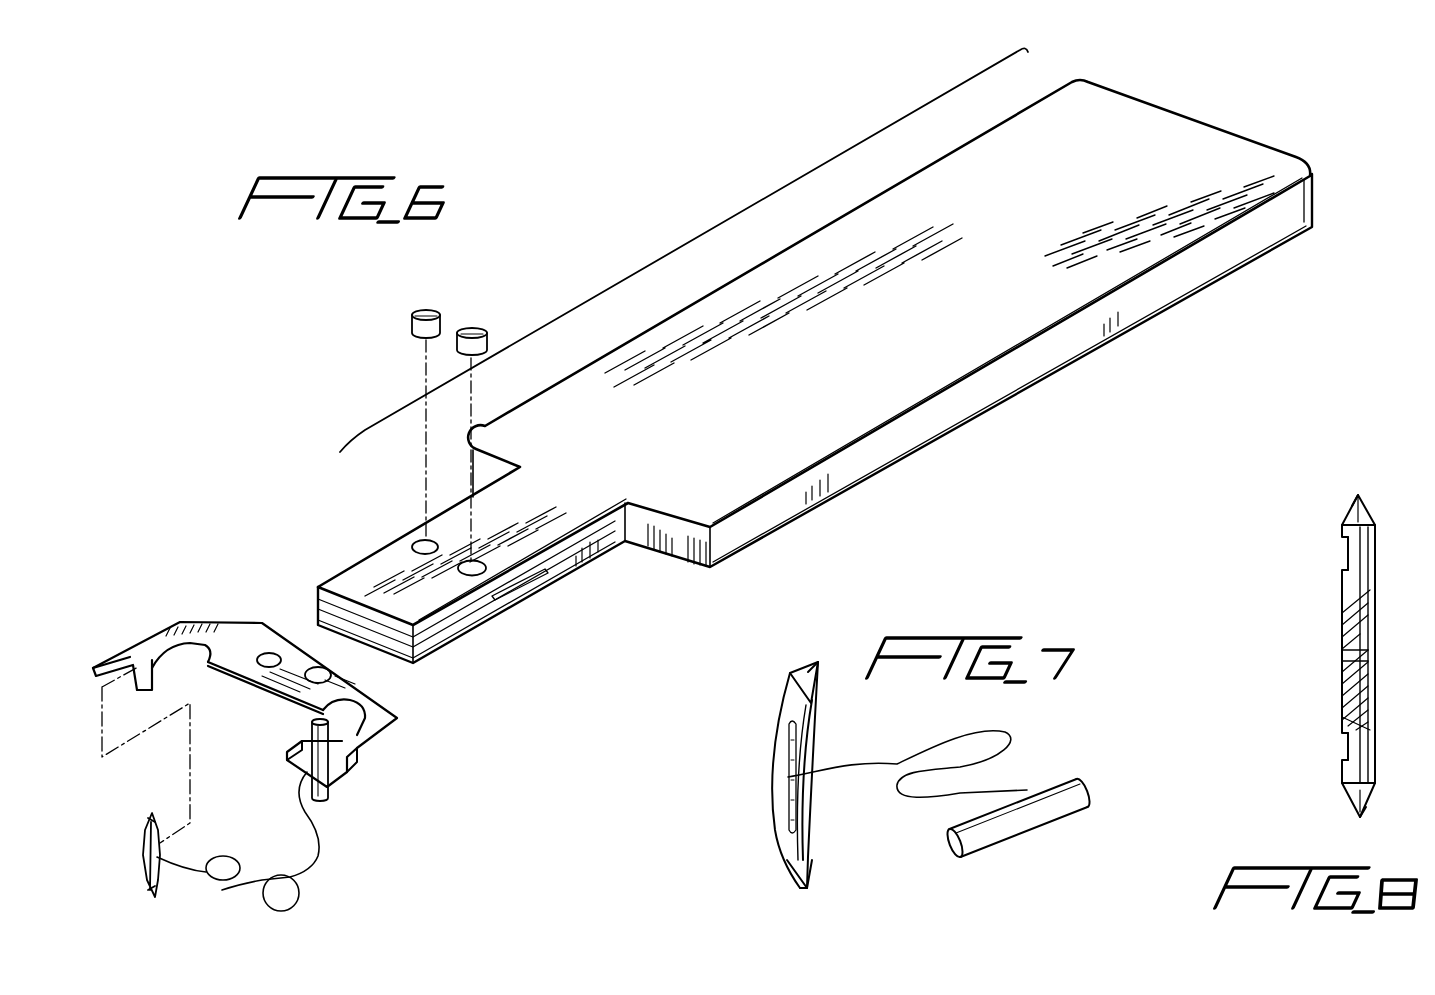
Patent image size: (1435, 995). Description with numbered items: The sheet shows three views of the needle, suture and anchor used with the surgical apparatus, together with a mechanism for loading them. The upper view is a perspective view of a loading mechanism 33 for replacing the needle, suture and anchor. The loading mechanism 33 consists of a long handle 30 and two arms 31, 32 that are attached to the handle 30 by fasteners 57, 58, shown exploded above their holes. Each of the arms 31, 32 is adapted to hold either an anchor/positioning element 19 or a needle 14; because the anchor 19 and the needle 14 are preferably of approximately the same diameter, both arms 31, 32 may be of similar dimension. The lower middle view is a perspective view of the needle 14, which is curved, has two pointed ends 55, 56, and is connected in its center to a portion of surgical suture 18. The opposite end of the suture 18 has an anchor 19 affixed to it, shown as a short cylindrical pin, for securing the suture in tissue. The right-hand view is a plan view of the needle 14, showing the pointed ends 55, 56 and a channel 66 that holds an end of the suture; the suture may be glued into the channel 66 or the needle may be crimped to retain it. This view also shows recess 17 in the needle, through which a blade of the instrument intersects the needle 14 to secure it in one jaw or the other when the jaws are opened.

In FIG. 6, the needle 14 is at (155, 857).
In FIG. 7, the needle 14 is at (782, 708).
In FIG. 8, the needle 14 is at (1358, 656).
In FIG. 6, the recess 17 is at (147, 838).
In FIG. 8, the recess 17 is at (1348, 553).
In FIG. 6, the surgical suture 18 is at (313, 865).
In FIG. 7, the surgical suture 18 is at (1013, 735).
In FIG. 6, the anchor 19 is at (328, 798).
In FIG. 7, the anchor 19 is at (993, 827).
In FIG. 6, the handle 30 is at (860, 212).
In FIG. 6, the arm 31 is at (160, 633).
In FIG. 6, the arm 32 is at (373, 740).
In FIG. 6, the loading mechanism 33 is at (692, 243).
In FIG. 7, the pointed end 55 is at (812, 663).
In FIG. 8, the pointed end 55 is at (1363, 502).
In FIG. 7, the pointed end 56 is at (808, 877).
In FIG. 8, the pointed end 56 is at (1362, 808).
In FIG. 6, the fastener 57 is at (413, 317).
In FIG. 6, the fastener 58 is at (465, 328).
In FIG. 8, the channel 66 is at (1370, 657).